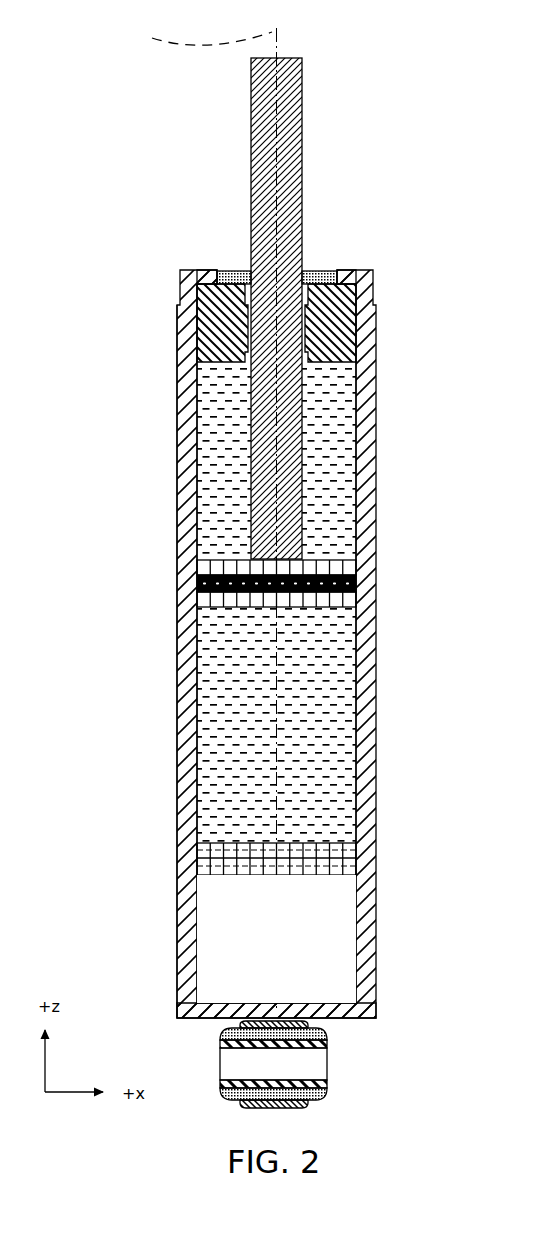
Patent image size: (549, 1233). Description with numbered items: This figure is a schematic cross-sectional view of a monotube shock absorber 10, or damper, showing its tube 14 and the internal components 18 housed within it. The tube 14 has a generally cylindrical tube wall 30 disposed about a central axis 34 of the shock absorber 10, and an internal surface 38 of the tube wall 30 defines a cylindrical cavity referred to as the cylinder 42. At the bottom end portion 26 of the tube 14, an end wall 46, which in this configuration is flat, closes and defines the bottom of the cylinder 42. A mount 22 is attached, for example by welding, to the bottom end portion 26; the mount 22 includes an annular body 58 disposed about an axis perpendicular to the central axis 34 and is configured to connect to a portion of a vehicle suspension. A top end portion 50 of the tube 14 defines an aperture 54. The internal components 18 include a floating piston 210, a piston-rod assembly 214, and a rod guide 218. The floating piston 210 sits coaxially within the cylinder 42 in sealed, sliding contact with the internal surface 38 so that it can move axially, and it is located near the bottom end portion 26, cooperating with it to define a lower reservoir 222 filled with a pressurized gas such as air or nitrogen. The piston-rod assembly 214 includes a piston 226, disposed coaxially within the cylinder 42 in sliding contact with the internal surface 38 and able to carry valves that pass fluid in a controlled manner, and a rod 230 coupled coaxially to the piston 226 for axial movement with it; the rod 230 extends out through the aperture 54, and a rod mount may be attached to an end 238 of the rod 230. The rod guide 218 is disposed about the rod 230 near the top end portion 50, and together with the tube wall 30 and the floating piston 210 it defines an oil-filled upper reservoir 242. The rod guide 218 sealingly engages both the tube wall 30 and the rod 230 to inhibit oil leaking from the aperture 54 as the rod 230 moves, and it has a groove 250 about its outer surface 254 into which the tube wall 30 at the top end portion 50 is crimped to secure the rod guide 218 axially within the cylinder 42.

The shock absorber 10 is at (85, 165).
The tube 14 is at (177, 700).
The internal components 18 is at (217, 898).
The mount 22 is at (267, 1078).
The bottom end portion 26 is at (167, 937).
The tube wall 30 is at (178, 800).
The central axis 34 is at (197, 33).
The internal surface 38 is at (356, 966).
The cylinder 42 is at (323, 933).
The end wall 46 is at (333, 1013).
The top end portion 50 is at (256, 265).
The aperture 54 is at (196, 280).
The annular body 58 is at (317, 1093).
The floating piston 210 is at (203, 866).
The piston-rod assembly 214 is at (195, 490).
The rod guide 218 is at (207, 332).
The lower reservoir 222 is at (322, 900).
The piston 226 is at (220, 558).
The rod 230 is at (305, 446).
The end of the rod 238 is at (300, 58).
The upper reservoir 242 is at (332, 745).
The groove 250 is at (228, 297).
The outer surface 254 is at (344, 332).